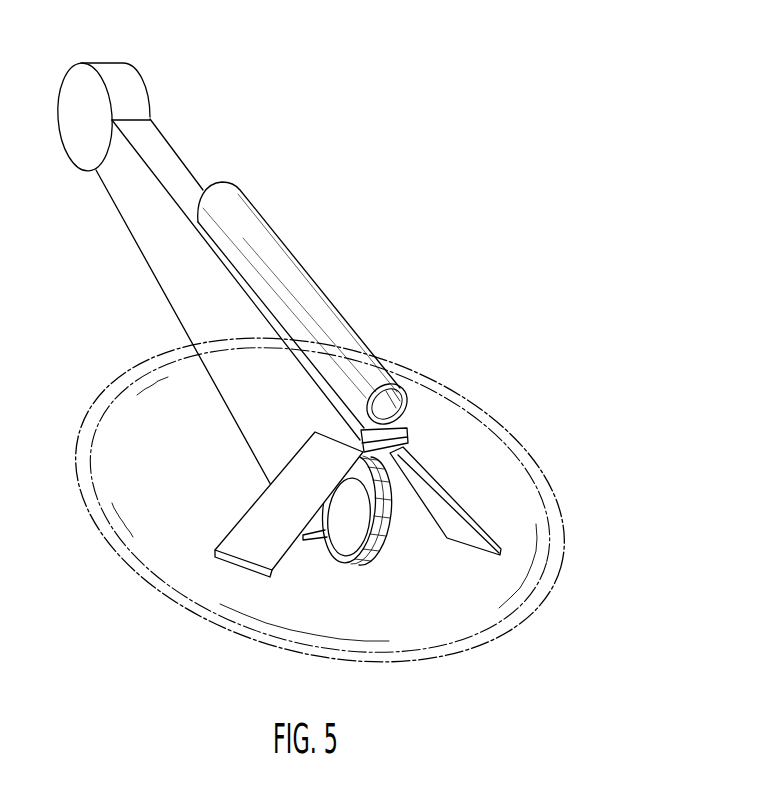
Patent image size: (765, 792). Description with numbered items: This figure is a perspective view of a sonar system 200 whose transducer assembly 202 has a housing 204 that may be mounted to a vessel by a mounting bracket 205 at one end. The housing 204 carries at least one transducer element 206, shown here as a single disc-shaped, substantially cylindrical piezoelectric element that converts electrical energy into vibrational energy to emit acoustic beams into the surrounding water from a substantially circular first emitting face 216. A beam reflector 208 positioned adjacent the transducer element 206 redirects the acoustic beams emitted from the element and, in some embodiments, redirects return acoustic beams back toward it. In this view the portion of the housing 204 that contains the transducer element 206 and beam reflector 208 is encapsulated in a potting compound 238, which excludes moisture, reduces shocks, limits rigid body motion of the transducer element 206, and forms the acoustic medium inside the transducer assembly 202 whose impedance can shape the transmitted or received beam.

The sonar system 200 is at (370, 70).
The transducer assembly 202 is at (345, 280).
The housing 204 is at (150, 272).
The mounting bracket 205 is at (143, 73).
The transducer element 206 is at (381, 568).
The beam reflector 208 is at (232, 517).
The first emitting face 216 is at (355, 530).
The potting compound 238 is at (118, 553).